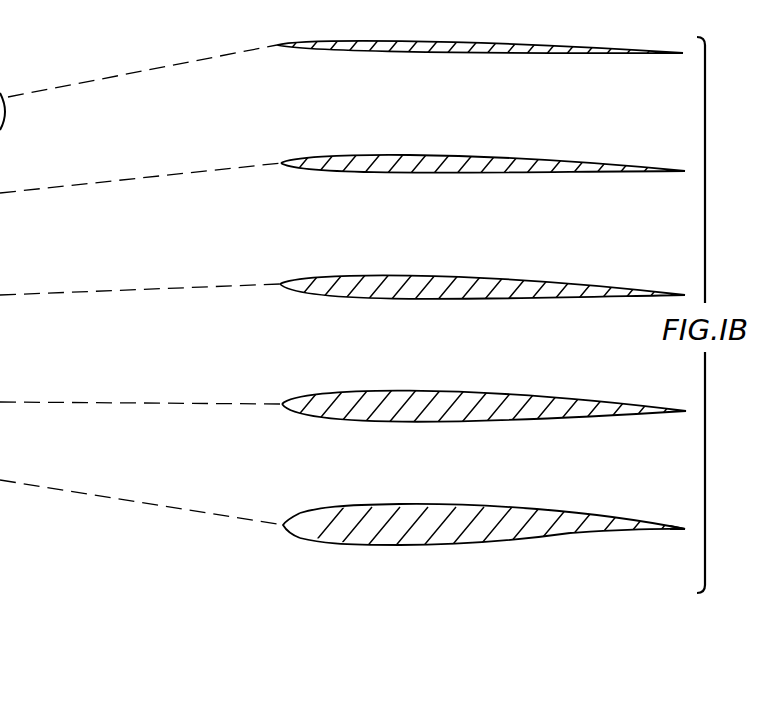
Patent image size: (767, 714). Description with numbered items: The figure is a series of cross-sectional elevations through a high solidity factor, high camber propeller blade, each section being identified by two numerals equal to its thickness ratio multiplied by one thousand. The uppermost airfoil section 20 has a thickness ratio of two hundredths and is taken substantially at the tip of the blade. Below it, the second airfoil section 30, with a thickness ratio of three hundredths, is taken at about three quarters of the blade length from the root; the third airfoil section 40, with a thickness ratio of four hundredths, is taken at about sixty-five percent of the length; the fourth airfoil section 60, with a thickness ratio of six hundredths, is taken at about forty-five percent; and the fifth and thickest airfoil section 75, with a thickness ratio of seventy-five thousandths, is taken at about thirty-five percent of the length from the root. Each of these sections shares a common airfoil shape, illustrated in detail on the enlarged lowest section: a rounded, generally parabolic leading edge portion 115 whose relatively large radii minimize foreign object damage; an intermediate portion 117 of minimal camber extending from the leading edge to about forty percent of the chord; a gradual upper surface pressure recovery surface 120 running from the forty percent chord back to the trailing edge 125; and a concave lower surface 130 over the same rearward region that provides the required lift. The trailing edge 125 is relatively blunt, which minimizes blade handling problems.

The airfoil section 20 is at (480, 50).
The second airfoil section 30 is at (492, 173).
The third airfoil section 40 is at (488, 295).
The fourth airfoil section 60 is at (487, 420).
The fifth airfoil section 75 is at (460, 528).
The leading edge portion 115 is at (283, 527).
The intermediate portion 117 is at (360, 535).
The upper surface pressure recovery surface 120 is at (473, 505).
The trailing edge 125 is at (684, 529).
The concave lower surface 130 is at (577, 533).